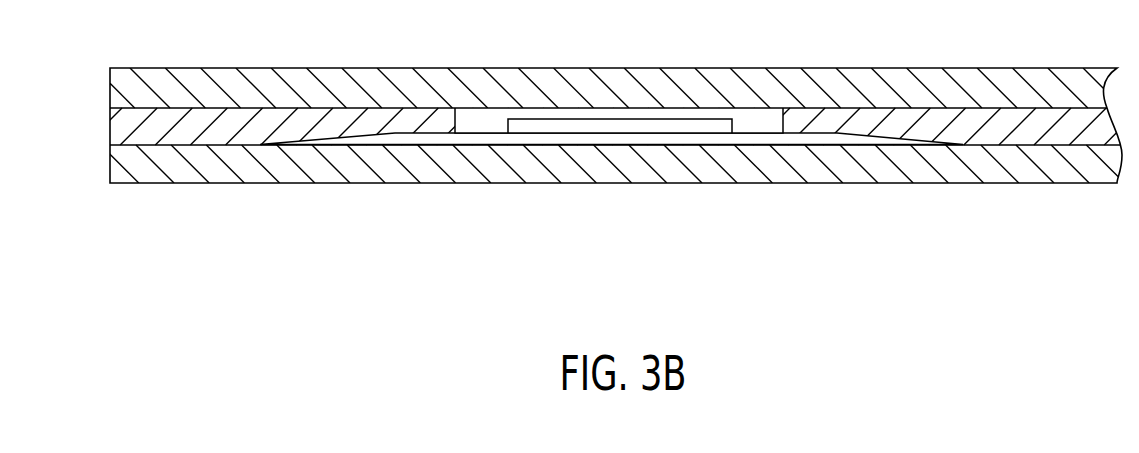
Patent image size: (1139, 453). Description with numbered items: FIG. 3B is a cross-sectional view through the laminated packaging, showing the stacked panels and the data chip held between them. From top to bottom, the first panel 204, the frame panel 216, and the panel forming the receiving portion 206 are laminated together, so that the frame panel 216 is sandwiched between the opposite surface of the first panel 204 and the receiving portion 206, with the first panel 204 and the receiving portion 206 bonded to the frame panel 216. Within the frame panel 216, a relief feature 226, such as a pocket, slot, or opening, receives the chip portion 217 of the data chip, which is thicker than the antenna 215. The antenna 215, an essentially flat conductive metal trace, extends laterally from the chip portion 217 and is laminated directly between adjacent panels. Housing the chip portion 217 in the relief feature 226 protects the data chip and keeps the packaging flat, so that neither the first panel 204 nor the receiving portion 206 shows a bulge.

The first panel 204 is at (121, 78).
The frame panel 216 is at (121, 132).
The receiving portion 206 is at (121, 170).
The antenna 215 is at (770, 143).
The chip portion 217 is at (622, 128).
The relief feature 226 is at (752, 117).